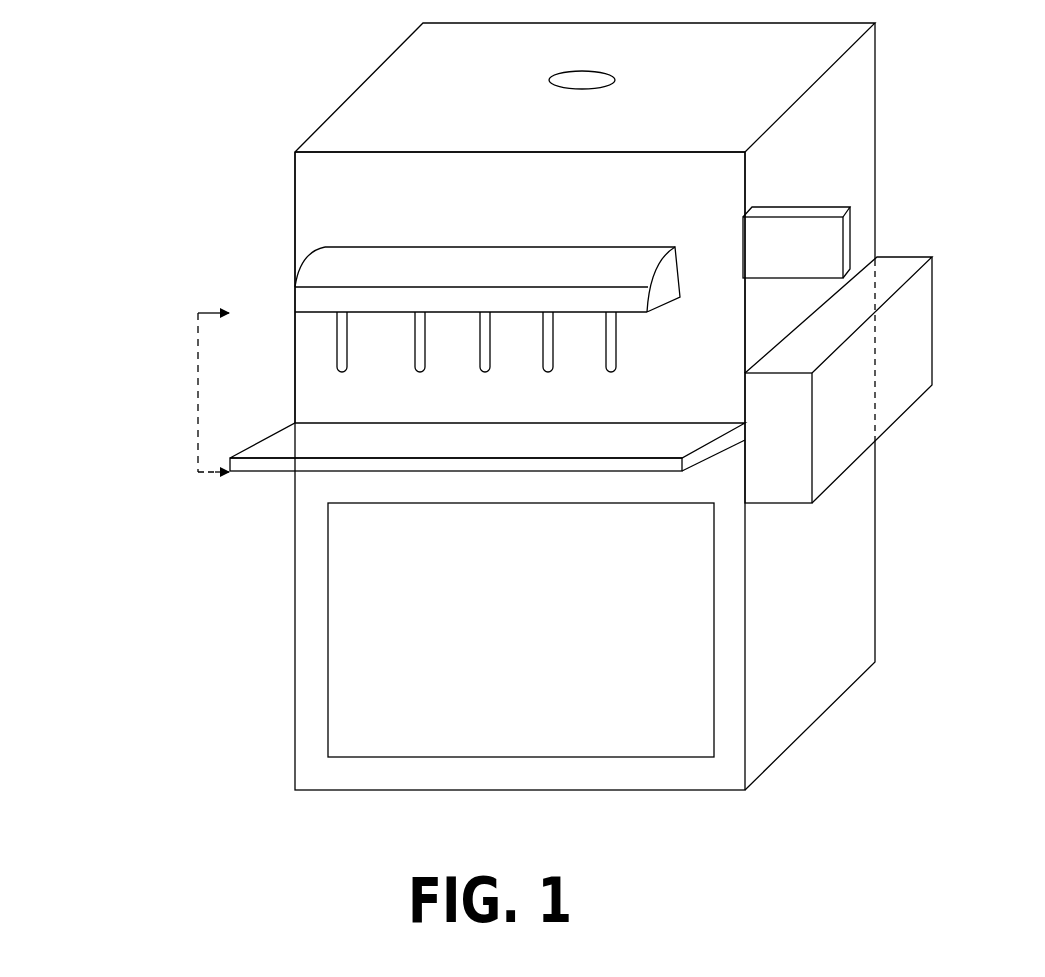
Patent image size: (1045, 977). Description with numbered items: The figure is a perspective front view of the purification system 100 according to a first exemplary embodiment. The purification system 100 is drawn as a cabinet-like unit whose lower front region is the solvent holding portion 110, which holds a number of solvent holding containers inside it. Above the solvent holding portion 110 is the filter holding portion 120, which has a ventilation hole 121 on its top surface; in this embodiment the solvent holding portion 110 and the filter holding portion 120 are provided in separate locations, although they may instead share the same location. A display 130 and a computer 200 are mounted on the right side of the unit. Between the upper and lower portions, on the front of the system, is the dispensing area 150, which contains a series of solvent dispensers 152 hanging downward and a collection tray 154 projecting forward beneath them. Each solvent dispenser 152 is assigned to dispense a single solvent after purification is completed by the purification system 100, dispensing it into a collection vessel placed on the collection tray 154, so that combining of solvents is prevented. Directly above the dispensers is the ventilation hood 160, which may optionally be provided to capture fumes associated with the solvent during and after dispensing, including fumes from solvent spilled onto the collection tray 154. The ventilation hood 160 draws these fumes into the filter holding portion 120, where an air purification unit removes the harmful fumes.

The purification system 100 is at (262, 796).
The solvent holding portion 110 is at (535, 677).
The filter holding portion 120 is at (540, 220).
The ventilation hole 121 is at (667, 108).
The display 130 is at (810, 270).
The dispensing area 150 is at (123, 411).
The solvent dispensers 152 is at (612, 381).
The collection tray 154 is at (608, 451).
The ventilation hood 160 is at (613, 275).
The computer 200 is at (801, 458).